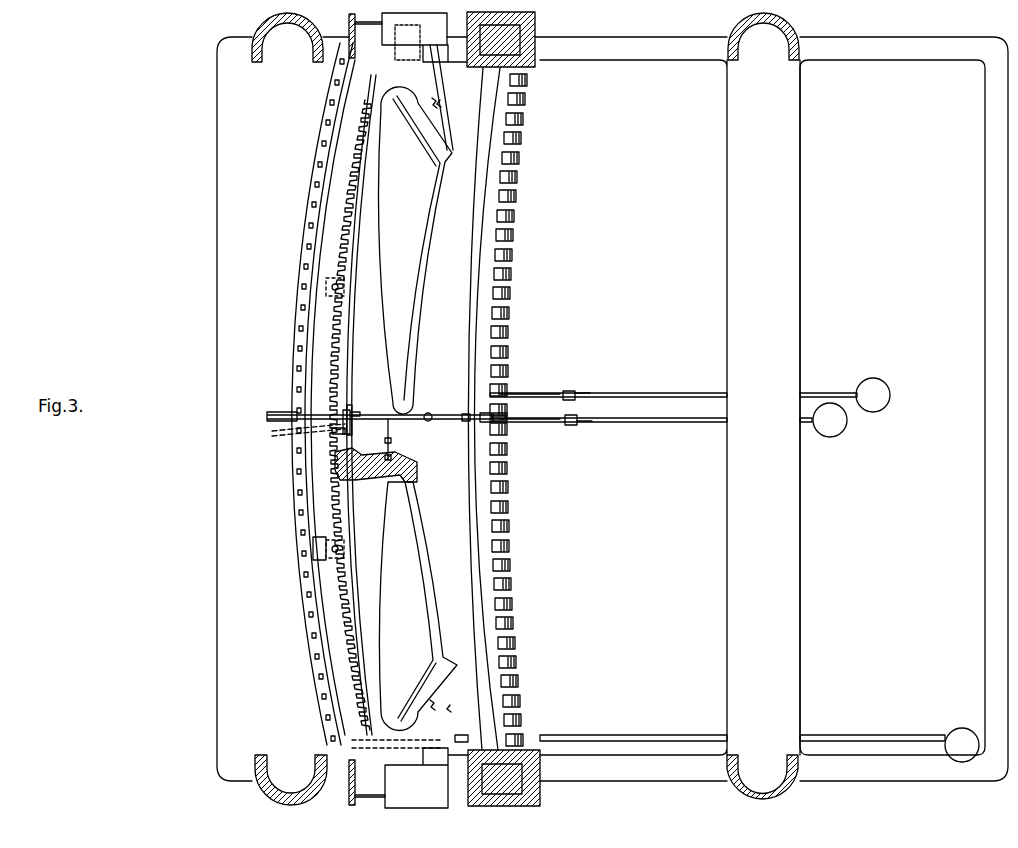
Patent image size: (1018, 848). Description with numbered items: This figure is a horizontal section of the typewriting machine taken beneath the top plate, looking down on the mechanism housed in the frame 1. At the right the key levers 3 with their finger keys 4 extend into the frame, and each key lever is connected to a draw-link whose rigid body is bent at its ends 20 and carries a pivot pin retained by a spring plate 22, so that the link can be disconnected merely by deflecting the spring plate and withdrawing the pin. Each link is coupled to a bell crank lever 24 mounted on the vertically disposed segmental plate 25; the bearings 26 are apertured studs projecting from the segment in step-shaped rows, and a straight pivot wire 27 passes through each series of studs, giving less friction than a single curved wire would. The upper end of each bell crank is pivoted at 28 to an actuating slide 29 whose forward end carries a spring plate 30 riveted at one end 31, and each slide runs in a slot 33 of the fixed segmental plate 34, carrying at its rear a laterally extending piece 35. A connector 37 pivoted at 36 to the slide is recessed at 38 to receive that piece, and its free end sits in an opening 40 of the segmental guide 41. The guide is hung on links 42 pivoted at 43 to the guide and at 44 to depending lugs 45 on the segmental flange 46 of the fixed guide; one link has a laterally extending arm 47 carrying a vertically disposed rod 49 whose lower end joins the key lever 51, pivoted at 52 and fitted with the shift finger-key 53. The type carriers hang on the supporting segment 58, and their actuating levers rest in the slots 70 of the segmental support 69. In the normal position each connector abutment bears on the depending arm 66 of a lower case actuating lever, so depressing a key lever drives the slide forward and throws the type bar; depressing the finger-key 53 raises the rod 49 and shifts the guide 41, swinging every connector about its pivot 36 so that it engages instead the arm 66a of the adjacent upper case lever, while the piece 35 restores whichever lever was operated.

The frame 1 is at (612, 409).
The key levers 3 is at (614, 398).
The finger keys 4 is at (868, 420).
The bent ends of draw-link 20 is at (575, 435).
The spring plate 22 is at (575, 393).
The bell crank lever 24 is at (535, 394).
The segmental plate 25 is at (530, 30).
The bearings 26 is at (512, 298).
The pivot wire 27 is at (508, 333).
The pivot of bell crank lever to slide 28 is at (492, 420).
The actuating slide 29 is at (386, 429).
The spring plate 30 is at (485, 412).
The rivet end of spring plate 31 is at (465, 413).
The slot 33 is at (400, 470).
The fixed segmental plate 34 is at (446, 80).
The laterally extending piece 35 is at (350, 426).
The pivot of connector 36 is at (428, 412).
The connector 37 is at (390, 437).
The recess 38 is at (338, 435).
The opening 40 is at (306, 247).
The segmental guide 41 is at (312, 183).
The links 42 is at (348, 50).
The pivot of link to guide 43 is at (356, 62).
The pivot of link to lug 44 is at (382, 30).
The depending lugs 45 is at (348, 18).
The segmental flange 46 is at (390, 55).
The laterally extending arm 47 is at (360, 745).
The rod 49 is at (385, 700).
The key lever 51 is at (630, 741).
The pivot of key lever 52 is at (461, 734).
The finger-key 53 is at (962, 728).
The supporting segment 58 is at (408, 250).
The depending arm 66 is at (352, 410).
The depending arm 66a is at (330, 430).
The segmental support 69 is at (360, 600).
The slots 70 is at (368, 648).